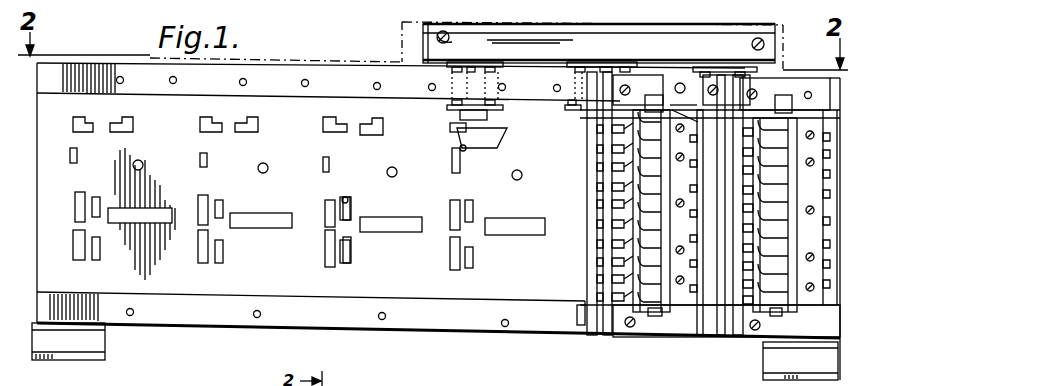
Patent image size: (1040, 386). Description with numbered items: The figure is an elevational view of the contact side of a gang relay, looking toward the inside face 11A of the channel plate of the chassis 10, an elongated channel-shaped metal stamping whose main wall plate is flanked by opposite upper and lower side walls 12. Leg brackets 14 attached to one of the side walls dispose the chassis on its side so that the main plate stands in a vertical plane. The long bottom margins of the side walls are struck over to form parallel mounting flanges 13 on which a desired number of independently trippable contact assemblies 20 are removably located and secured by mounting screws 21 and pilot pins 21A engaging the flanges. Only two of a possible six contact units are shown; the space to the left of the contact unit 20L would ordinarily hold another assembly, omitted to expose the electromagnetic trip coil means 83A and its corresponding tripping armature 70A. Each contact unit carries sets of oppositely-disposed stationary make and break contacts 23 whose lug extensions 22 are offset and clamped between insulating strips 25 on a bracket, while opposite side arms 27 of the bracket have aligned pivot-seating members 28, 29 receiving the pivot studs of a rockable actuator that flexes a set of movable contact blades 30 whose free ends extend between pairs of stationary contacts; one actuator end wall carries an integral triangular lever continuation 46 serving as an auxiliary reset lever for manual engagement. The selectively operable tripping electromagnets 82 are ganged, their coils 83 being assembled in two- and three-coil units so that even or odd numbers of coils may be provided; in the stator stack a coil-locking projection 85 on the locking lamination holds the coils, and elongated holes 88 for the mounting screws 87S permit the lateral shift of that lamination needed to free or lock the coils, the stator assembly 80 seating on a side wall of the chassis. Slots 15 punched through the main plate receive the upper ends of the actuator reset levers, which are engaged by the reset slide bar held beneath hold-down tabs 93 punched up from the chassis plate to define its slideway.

The chassis 10 is at (338, 58).
The inside face of the channel plate 11A is at (318, 153).
The side walls 12 is at (308, 59).
The mounting flanges 13 is at (297, 303).
The leg brackets 14 is at (100, 342).
The slots 15 is at (284, 95).
The contact assemblies 20 is at (716, 322).
The contact unit 20L is at (586, 292).
The mounting screws 21 is at (630, 80).
The pilot pins 21A is at (676, 84).
The lug extensions 22 is at (583, 122).
The stationary make and break contacts 23 is at (598, 190).
The insulating strips 25 is at (590, 240).
The side arms 27 is at (786, 88).
The pivot-seating member 28 is at (656, 312).
The pivot-seating member 29 is at (654, 100).
The movable contact blades 30 is at (652, 235).
The lever continuation 46 is at (682, 86).
The tripping armature 70A is at (495, 142).
The housing 80 is at (598, 24).
The tripping electromagnets 82 is at (476, 61).
The coils 83 is at (560, 109).
The electromagnetic trip coil means 83A is at (456, 111).
The coil-locking projection 85 is at (456, 125).
The mounting screws 87S is at (453, 36).
The elongated holes 88 is at (418, 30).
The hold-down tabs 93 is at (348, 198).